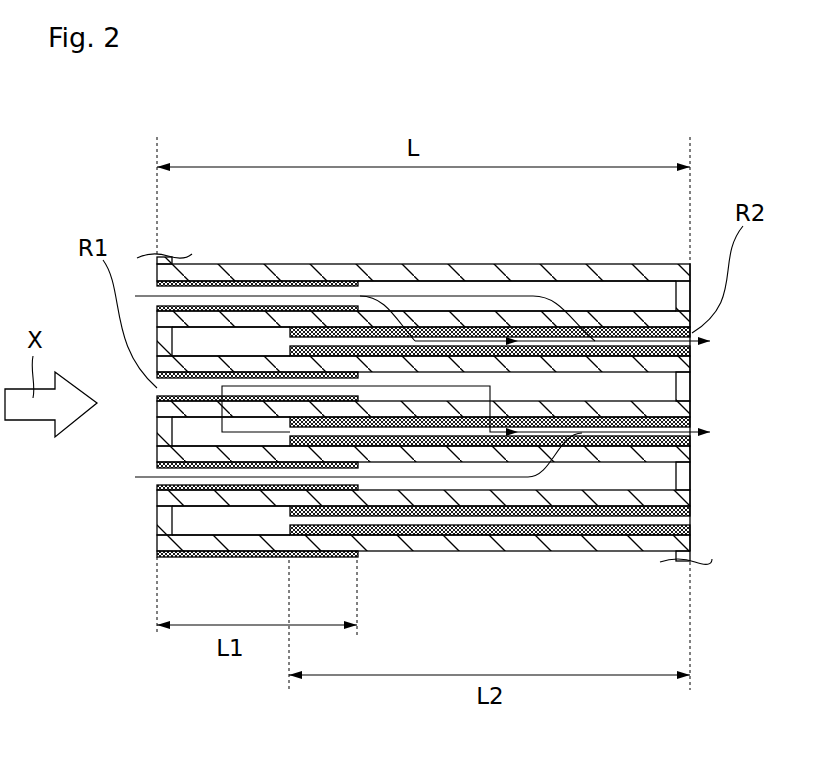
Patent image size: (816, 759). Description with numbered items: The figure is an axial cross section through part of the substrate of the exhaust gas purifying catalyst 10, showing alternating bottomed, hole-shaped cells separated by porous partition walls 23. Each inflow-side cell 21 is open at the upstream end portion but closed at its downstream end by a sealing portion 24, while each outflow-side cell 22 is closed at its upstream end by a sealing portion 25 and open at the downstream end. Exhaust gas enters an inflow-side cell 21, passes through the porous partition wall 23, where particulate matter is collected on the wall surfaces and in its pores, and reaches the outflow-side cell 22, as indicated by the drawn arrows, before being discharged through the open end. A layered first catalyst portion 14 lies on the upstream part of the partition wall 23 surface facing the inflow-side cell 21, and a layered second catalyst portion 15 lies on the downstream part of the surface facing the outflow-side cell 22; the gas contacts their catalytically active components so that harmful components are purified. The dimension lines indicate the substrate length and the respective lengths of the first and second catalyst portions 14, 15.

The exhaust gas purifying catalyst 10 is at (622, 128).
The first catalyst portion 14 is at (229, 491).
The second catalyst portion 15 is at (458, 509).
The inflow-side cell 21 is at (625, 297).
The outflow-side cell 22 is at (243, 337).
The partition wall 23 is at (480, 273).
The sealing portion 24 is at (690, 477).
The sealing portion 25 is at (165, 518).